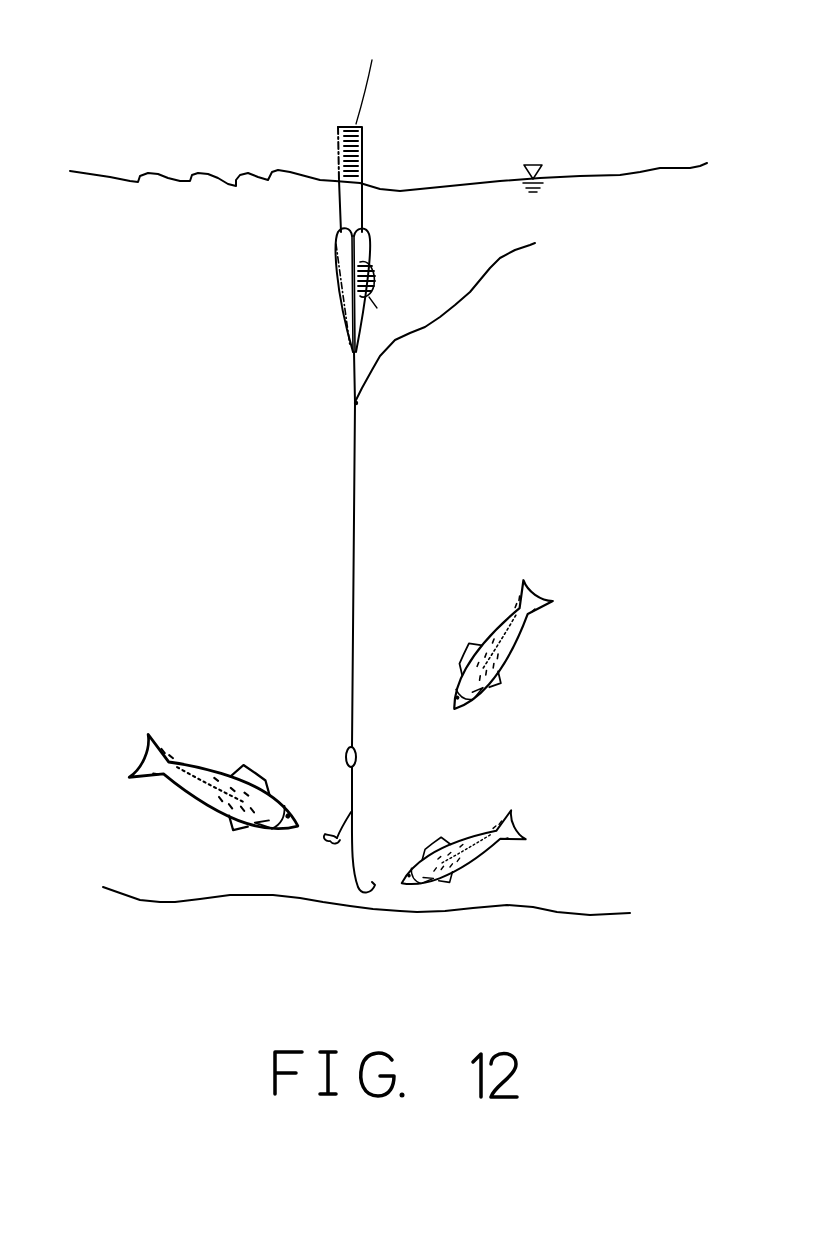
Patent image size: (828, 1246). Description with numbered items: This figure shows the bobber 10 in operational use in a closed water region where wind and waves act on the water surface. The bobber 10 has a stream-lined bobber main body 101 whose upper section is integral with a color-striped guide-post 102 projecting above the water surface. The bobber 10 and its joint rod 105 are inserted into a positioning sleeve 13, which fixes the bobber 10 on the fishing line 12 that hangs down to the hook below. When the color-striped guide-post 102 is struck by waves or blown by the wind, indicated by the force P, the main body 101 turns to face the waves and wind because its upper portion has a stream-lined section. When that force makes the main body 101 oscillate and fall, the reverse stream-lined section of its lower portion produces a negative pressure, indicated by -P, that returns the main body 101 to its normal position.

The bobber 10 is at (422, 194).
The bobber main body 101 is at (368, 252).
The color-striped guide-post 102 is at (362, 147).
The joint rod 105 is at (355, 383).
The positioning sleeve 13 is at (356, 403).
The fishing line 12 is at (354, 497).